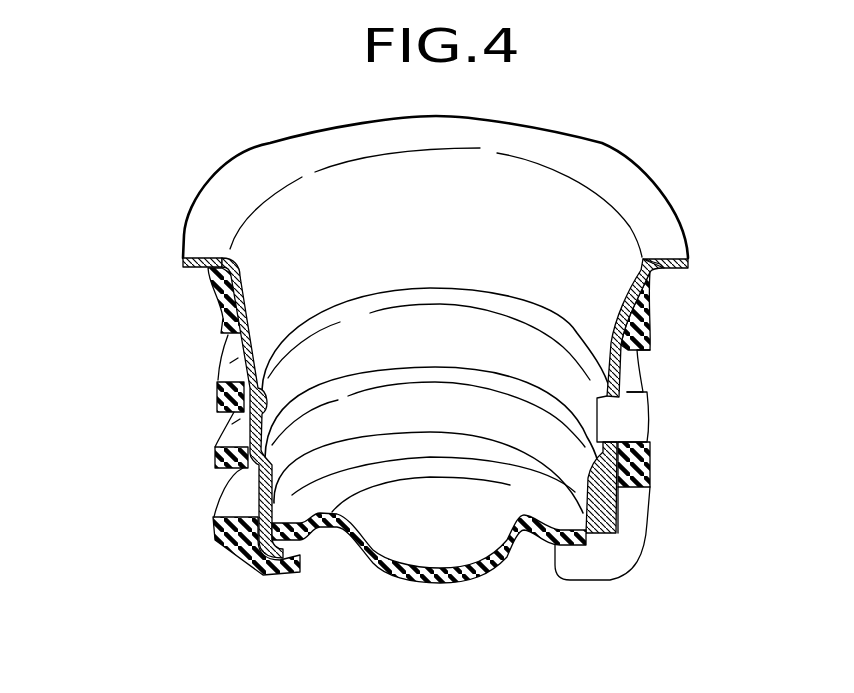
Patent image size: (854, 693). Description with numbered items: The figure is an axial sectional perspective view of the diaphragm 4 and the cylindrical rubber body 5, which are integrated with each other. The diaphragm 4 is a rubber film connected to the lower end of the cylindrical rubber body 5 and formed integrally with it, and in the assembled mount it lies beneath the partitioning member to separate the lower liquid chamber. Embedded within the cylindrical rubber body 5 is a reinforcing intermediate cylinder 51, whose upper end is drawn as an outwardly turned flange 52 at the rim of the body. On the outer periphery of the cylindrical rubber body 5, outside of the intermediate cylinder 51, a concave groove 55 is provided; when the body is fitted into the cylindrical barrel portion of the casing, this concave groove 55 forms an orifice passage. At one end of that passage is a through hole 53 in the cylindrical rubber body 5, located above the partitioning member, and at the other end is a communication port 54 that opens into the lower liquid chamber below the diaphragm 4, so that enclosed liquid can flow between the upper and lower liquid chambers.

The diaphragm 4 is at (478, 578).
The cylindrical rubber body 5 is at (652, 491).
The reinforcing intermediate cylinder 51 is at (618, 328).
The flange 52 is at (678, 258).
The through hole 53 is at (625, 410).
The communication port 54 is at (622, 547).
The concave groove 55 is at (232, 363).